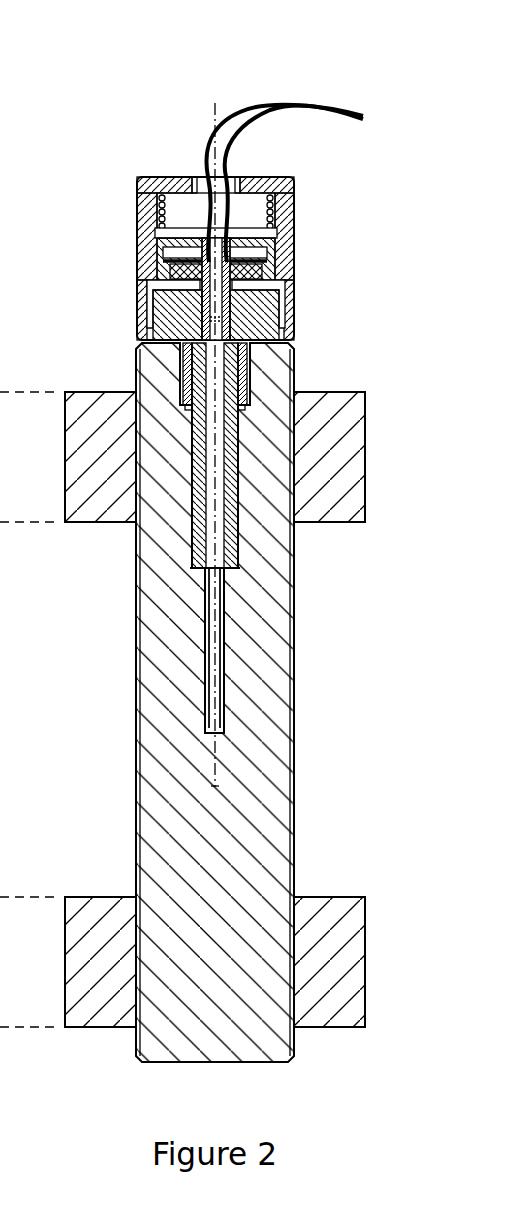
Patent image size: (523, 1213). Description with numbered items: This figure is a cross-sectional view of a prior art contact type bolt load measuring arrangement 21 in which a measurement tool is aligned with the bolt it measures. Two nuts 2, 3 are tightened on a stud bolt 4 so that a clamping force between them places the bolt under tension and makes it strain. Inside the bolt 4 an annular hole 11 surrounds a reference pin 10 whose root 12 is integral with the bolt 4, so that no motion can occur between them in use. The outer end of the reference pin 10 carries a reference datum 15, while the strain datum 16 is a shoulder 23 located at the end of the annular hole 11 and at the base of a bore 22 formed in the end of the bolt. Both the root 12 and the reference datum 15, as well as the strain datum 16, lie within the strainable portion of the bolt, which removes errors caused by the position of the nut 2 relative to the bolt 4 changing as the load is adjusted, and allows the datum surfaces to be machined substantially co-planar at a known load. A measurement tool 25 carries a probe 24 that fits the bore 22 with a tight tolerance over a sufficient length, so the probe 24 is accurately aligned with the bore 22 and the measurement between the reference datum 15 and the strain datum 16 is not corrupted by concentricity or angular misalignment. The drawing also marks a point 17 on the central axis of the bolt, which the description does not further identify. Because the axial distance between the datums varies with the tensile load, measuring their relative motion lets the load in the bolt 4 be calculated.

The contact type bolt load measuring arrangement 21 is at (80, 66).
The measurement tool 25 is at (312, 247).
The probe 24 is at (233, 437).
The bore 22 is at (237, 527).
The shoulder 23 is at (228, 571).
The reference datum 15 is at (222, 571).
The strain datum 16 is at (205, 570).
The reference pin 10 is at (213, 638).
The hole 11 is at (210, 688).
The root 12 is at (207, 733).
The measuring point / axis 17 is at (220, 787).
The nut 2 is at (92, 513).
The nut 3 is at (87, 900).
The stud bolt 4 is at (157, 1050).